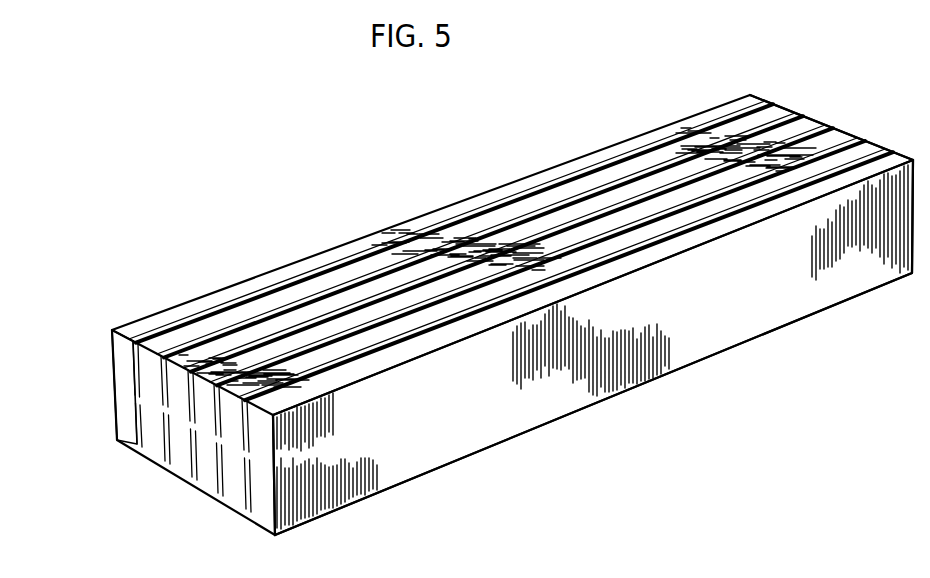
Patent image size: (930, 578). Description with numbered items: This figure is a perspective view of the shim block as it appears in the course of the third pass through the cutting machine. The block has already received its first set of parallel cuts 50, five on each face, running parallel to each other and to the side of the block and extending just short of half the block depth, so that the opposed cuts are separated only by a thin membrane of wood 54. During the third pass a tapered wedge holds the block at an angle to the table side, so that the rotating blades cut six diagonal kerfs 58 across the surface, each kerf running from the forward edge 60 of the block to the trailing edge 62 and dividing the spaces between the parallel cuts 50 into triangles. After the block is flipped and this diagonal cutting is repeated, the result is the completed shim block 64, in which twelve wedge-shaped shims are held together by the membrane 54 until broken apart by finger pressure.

The cuts 50 is at (593, 170).
The membrane of wood 54 is at (140, 394).
The diagonal kerfs 58 is at (337, 260).
The forward edge 60 is at (182, 462).
The trailing edge 62 is at (813, 120).
The shim block 64 is at (738, 318).